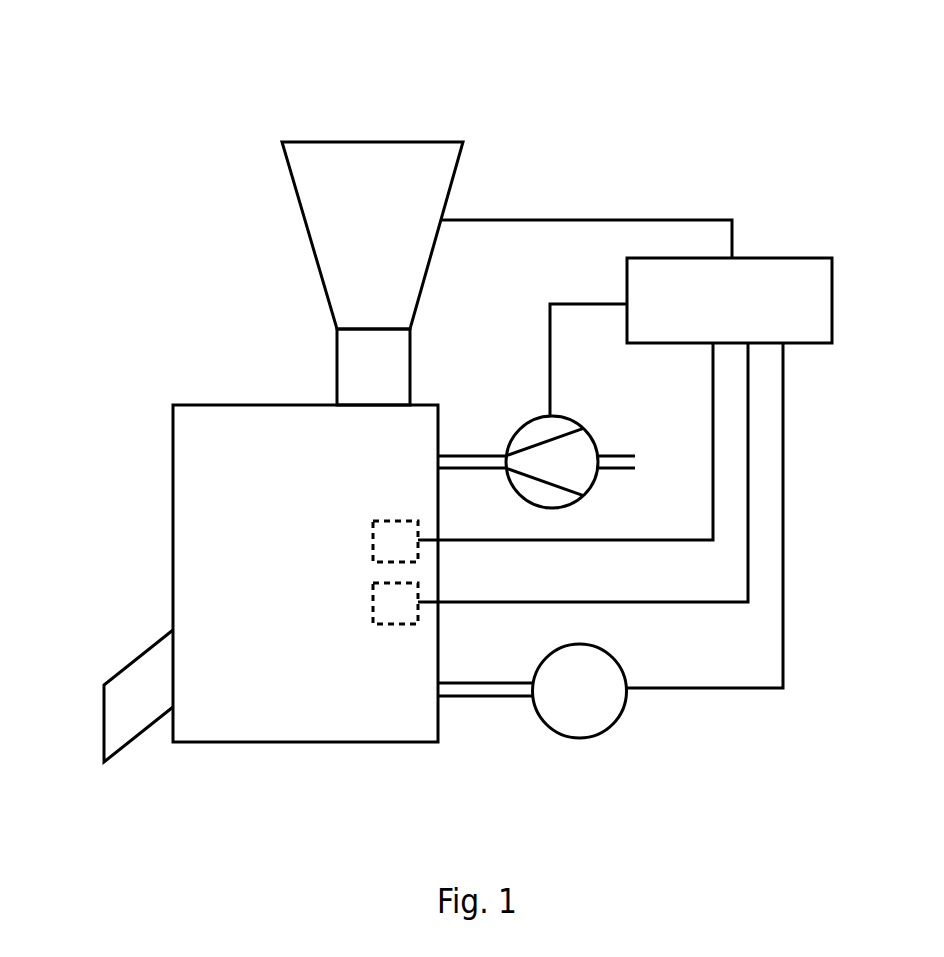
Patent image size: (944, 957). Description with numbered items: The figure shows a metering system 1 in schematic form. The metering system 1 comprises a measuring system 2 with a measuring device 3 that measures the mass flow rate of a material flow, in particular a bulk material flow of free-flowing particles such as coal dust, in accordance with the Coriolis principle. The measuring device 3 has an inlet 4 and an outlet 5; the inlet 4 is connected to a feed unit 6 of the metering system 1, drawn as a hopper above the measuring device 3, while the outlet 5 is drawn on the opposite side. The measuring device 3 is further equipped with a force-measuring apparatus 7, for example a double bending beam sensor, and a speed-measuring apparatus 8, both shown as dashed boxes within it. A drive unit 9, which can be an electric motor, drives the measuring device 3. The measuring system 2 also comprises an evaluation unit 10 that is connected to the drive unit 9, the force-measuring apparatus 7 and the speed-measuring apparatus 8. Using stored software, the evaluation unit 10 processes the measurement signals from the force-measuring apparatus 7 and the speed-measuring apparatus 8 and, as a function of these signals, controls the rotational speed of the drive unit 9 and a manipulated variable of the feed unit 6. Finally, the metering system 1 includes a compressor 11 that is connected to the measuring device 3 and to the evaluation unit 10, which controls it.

The metering system 1 is at (150, 94).
The measuring system 2 is at (540, 790).
The measuring device 3 is at (152, 388).
The inlet 4 is at (337, 377).
The outlet 5 is at (135, 655).
The feed unit 6 is at (297, 202).
The force-measuring apparatus 7 is at (373, 543).
The speed-measuring apparatus 8 is at (373, 604).
The drive unit 9 is at (624, 713).
The evaluation unit 10 is at (795, 258).
The compressor 11 is at (535, 418).